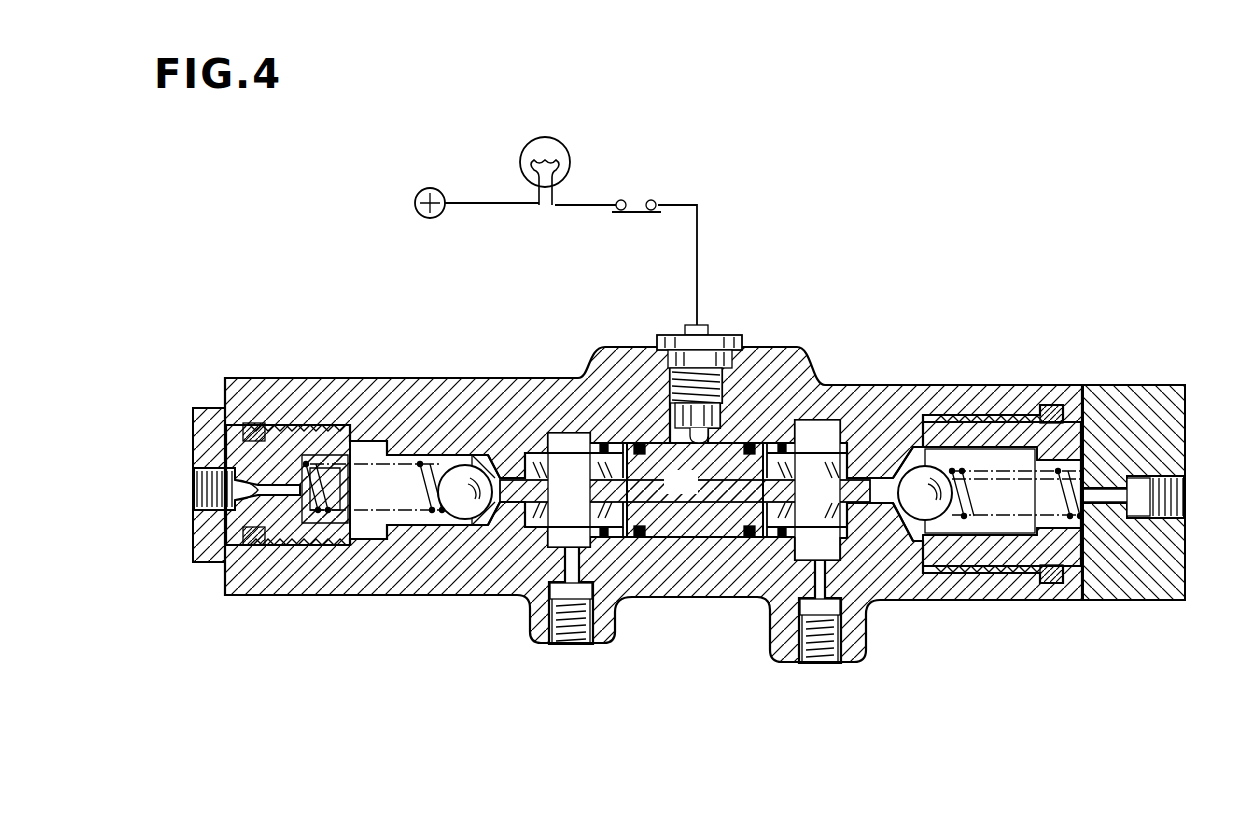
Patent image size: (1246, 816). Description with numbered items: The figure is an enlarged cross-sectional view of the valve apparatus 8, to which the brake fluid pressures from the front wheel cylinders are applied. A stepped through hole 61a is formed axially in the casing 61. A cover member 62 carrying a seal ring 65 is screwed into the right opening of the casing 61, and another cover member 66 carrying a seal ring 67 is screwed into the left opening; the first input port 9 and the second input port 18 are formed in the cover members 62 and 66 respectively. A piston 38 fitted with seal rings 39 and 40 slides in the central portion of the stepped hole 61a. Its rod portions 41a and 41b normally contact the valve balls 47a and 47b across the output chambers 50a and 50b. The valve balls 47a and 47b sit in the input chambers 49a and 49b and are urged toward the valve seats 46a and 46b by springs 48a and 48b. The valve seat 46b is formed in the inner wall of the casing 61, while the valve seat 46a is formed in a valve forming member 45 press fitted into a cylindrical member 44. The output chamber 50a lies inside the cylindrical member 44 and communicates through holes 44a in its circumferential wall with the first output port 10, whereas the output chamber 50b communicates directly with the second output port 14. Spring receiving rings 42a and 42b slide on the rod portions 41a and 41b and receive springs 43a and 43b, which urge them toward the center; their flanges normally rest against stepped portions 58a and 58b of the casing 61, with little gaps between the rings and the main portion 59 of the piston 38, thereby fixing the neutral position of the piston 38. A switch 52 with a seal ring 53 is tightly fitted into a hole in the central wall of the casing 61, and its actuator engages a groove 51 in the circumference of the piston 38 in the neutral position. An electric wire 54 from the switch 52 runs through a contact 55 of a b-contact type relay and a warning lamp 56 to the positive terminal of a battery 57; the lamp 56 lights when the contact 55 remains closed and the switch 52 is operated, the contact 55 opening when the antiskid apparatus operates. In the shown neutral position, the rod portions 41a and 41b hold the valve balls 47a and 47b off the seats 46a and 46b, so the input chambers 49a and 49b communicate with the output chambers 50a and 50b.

The valve apparatus 8 is at (845, 330).
The first input port 9 is at (1188, 493).
The first output port 10 is at (820, 663).
The second output port 14 is at (580, 643).
The second input port 18 is at (210, 497).
The piston 38 is at (670, 537).
The seal ring 39 is at (641, 443).
The seal ring 40 is at (750, 443).
The rod portion 41a is at (885, 541).
The rod portion 41b is at (498, 505).
The spring receiving ring 42a is at (782, 440).
The spring receiving ring 42b is at (618, 440).
The spring 43a is at (806, 430).
The spring 43b is at (527, 447).
The cylindrical member 44 is at (912, 521).
The holes 44a is at (795, 547).
The valve forming member 45 is at (890, 477).
The valve seat 46a is at (975, 520).
The valve seat 46b is at (456, 520).
The valve ball 47a is at (993, 457).
The valve ball 47b is at (422, 520).
The spring 48a is at (1072, 566).
The spring 48b is at (310, 525).
The input chamber 49a is at (997, 448).
The input chamber 49b is at (408, 453).
The output chamber 50a is at (840, 435).
The output chamber 50b is at (567, 440).
The groove 51 is at (695, 490).
The switch 52 is at (708, 390).
The seal ring 53 is at (696, 425).
The electric wire 54 is at (700, 238).
The contact 55 is at (638, 200).
The warning lamp 56 is at (522, 154).
The battery 57 is at (430, 188).
The stepped portion 58a is at (777, 547).
The stepped portion 58b is at (612, 443).
The main portion 59 is at (655, 547).
The casing 61 is at (936, 400).
The stepped through hole 61a is at (710, 547).
The cover member 62 is at (1140, 410).
The seal ring 65 is at (1052, 405).
The cover member 66 is at (215, 448).
The seal ring 67 is at (252, 423).